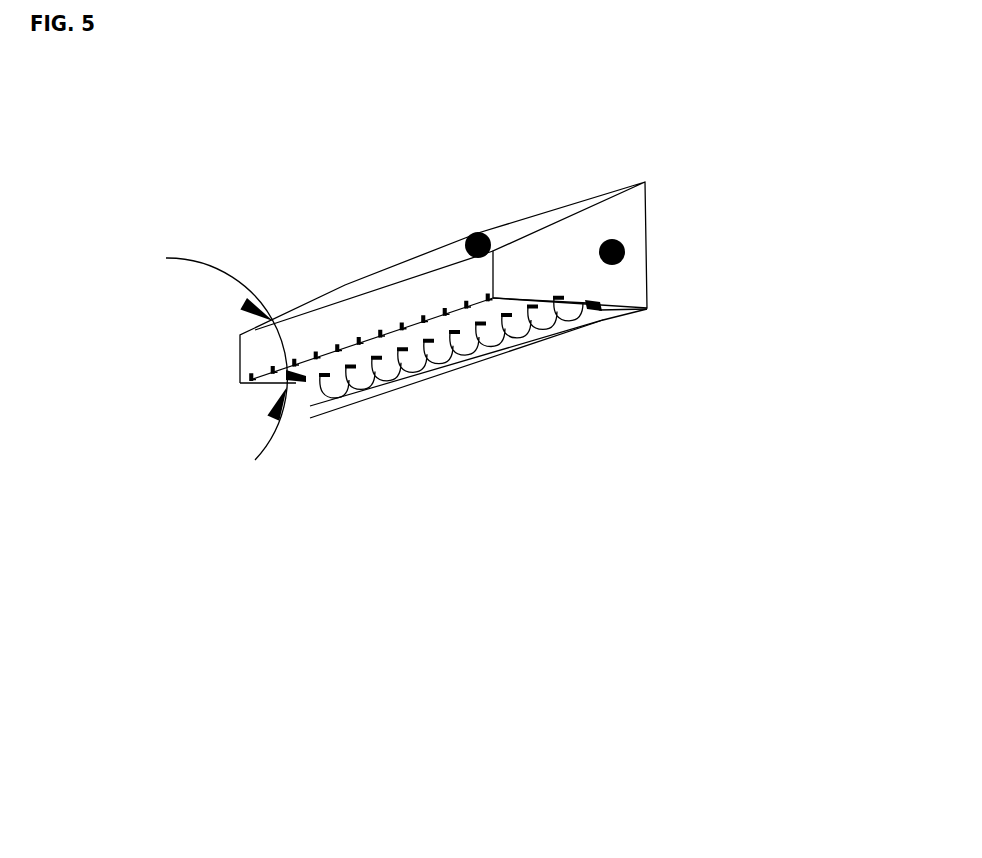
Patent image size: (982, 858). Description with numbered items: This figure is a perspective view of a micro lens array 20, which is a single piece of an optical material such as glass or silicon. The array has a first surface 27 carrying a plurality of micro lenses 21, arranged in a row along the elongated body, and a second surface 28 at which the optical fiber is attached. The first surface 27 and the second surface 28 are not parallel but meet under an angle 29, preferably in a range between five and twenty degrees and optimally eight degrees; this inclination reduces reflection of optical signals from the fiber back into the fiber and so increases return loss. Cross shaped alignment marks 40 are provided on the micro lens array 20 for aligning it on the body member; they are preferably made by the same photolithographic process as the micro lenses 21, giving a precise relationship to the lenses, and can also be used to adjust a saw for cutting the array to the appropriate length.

The micro lens array 20 is at (625, 252).
The micro lenses 21 is at (537, 337).
The first surface 27 is at (605, 322).
The second surface 28 is at (470, 236).
The angle 29 is at (226, 327).
The alignment marks 40 is at (302, 390).